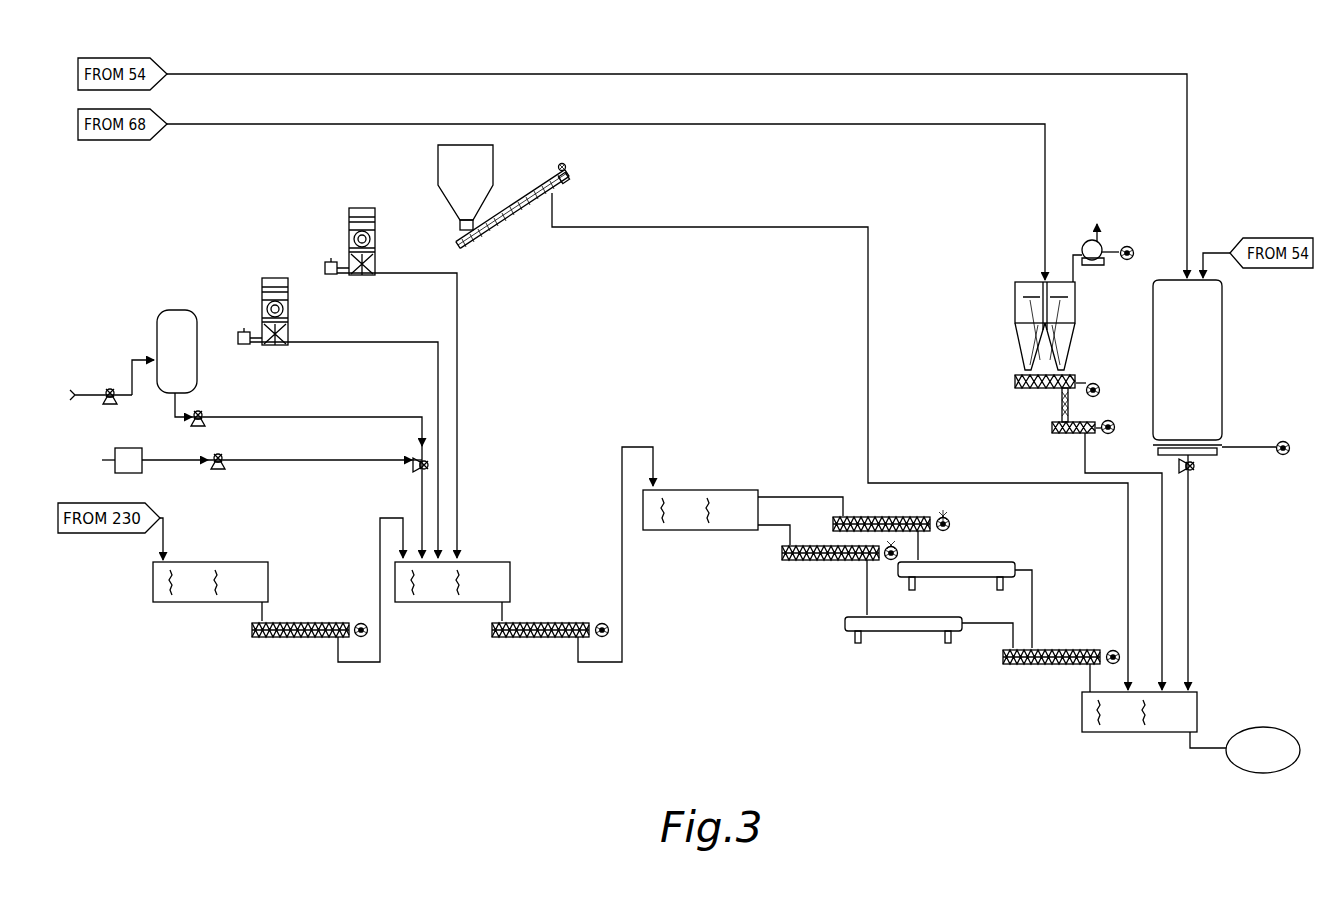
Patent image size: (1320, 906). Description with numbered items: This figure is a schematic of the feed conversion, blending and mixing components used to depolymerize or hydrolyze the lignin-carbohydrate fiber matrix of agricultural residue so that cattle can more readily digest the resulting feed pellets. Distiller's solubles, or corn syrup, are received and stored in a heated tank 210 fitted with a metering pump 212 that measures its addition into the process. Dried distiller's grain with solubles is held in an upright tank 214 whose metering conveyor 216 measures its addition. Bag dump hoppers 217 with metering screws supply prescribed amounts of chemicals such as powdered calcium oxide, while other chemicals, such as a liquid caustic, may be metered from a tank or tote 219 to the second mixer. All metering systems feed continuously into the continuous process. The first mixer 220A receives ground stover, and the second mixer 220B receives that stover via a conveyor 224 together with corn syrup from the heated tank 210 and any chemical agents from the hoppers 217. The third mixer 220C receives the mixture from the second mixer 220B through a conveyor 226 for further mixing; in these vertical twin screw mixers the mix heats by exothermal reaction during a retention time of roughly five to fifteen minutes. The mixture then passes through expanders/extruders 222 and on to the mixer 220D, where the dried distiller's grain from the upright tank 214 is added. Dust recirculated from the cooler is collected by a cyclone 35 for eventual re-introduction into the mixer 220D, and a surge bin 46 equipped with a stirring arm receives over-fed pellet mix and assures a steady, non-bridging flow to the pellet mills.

The heated tank 210 is at (166, 323).
The metering pump 212 is at (203, 410).
The upright tank 214 is at (445, 162).
The metering conveyor 216 is at (498, 225).
The bag dump hopper 217 is at (264, 282).
The tank or tote 219 is at (352, 212).
The first mixer 220A is at (230, 565).
The second mixer 220B is at (502, 575).
The third mixer 220C is at (717, 528).
The mixer 220D is at (1118, 725).
The expanders/extruders 222 is at (973, 563).
The conveyor 224 is at (1047, 650).
The conveyor 226 is at (300, 637).
The cyclone 35 is at (1022, 300).
The surge bin 46 is at (1213, 333).